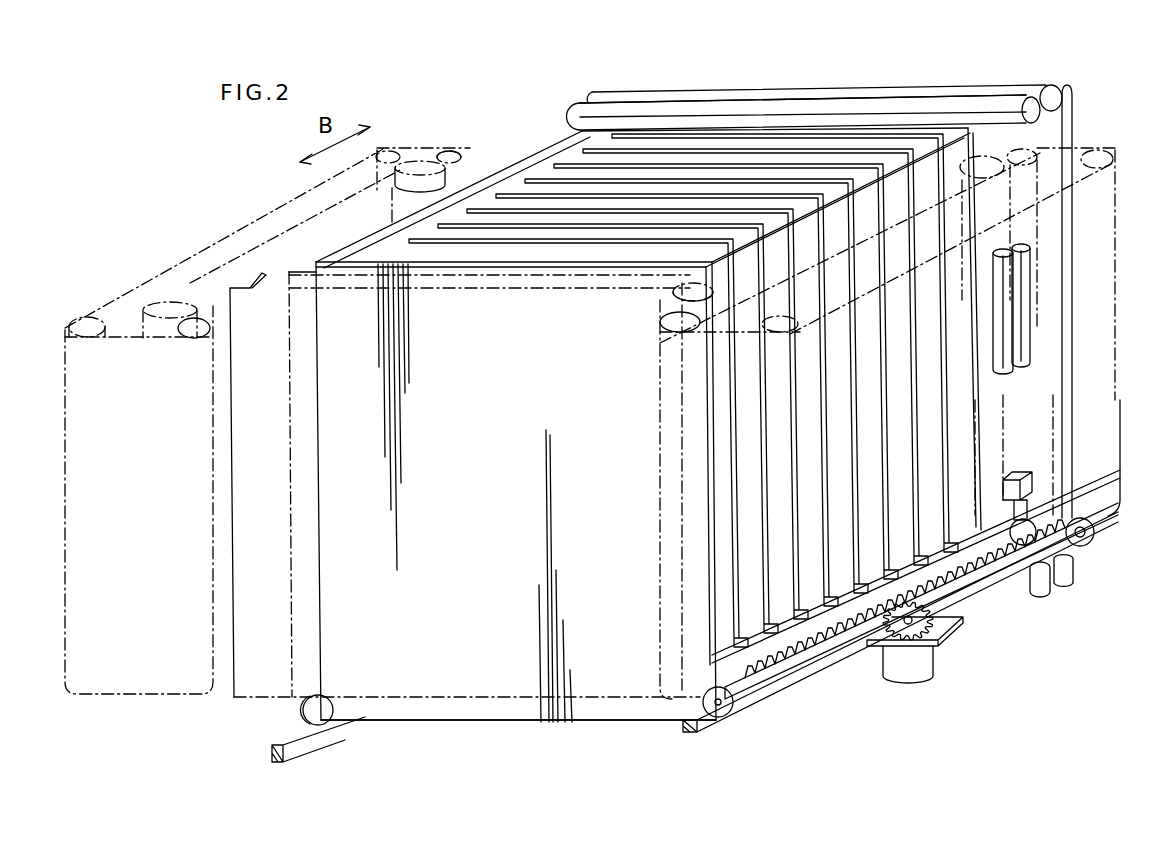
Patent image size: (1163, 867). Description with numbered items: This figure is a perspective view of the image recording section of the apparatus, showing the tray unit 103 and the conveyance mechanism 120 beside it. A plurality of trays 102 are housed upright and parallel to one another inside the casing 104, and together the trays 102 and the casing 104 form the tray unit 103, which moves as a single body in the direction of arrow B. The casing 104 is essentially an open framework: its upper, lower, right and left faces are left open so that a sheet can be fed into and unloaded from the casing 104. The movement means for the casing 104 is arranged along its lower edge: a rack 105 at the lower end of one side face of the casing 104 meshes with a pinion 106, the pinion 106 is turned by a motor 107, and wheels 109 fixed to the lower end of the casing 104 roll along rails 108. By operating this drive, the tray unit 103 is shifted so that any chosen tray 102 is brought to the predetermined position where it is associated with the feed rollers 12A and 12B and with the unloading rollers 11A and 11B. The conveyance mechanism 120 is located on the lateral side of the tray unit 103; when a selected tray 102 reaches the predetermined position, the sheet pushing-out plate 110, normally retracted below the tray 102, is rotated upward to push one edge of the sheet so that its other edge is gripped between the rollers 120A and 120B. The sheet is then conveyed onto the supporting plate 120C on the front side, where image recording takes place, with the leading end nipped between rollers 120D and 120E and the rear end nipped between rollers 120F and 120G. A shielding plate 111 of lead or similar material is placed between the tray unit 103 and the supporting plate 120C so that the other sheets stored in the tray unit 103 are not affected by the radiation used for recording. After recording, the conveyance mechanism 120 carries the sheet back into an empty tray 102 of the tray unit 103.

The tray 102 is at (530, 183).
The tray unit 103 is at (570, 85).
The casing 104 is at (483, 174).
The rack 105 is at (831, 648).
The pinion 106 is at (933, 623).
The motor 107 is at (903, 662).
The rail 108 is at (313, 740).
The wheel 109 is at (303, 706).
The sheet pushing-out plate 110 is at (1027, 487).
The shielding plate 111 is at (430, 275).
The unloading roller 11A is at (1017, 593).
The unloading roller 11B is at (1060, 580).
The feed roller 12A is at (637, 110).
The feed roller 12B is at (730, 95).
The conveyance mechanism 120 is at (259, 224).
The roller 120A is at (418, 165).
The roller 120B is at (470, 160).
The supporting plate 120C is at (463, 680).
The roller 120D is at (145, 337).
The roller 120E is at (196, 348).
The roller 120F is at (673, 297).
The roller 120G is at (660, 325).